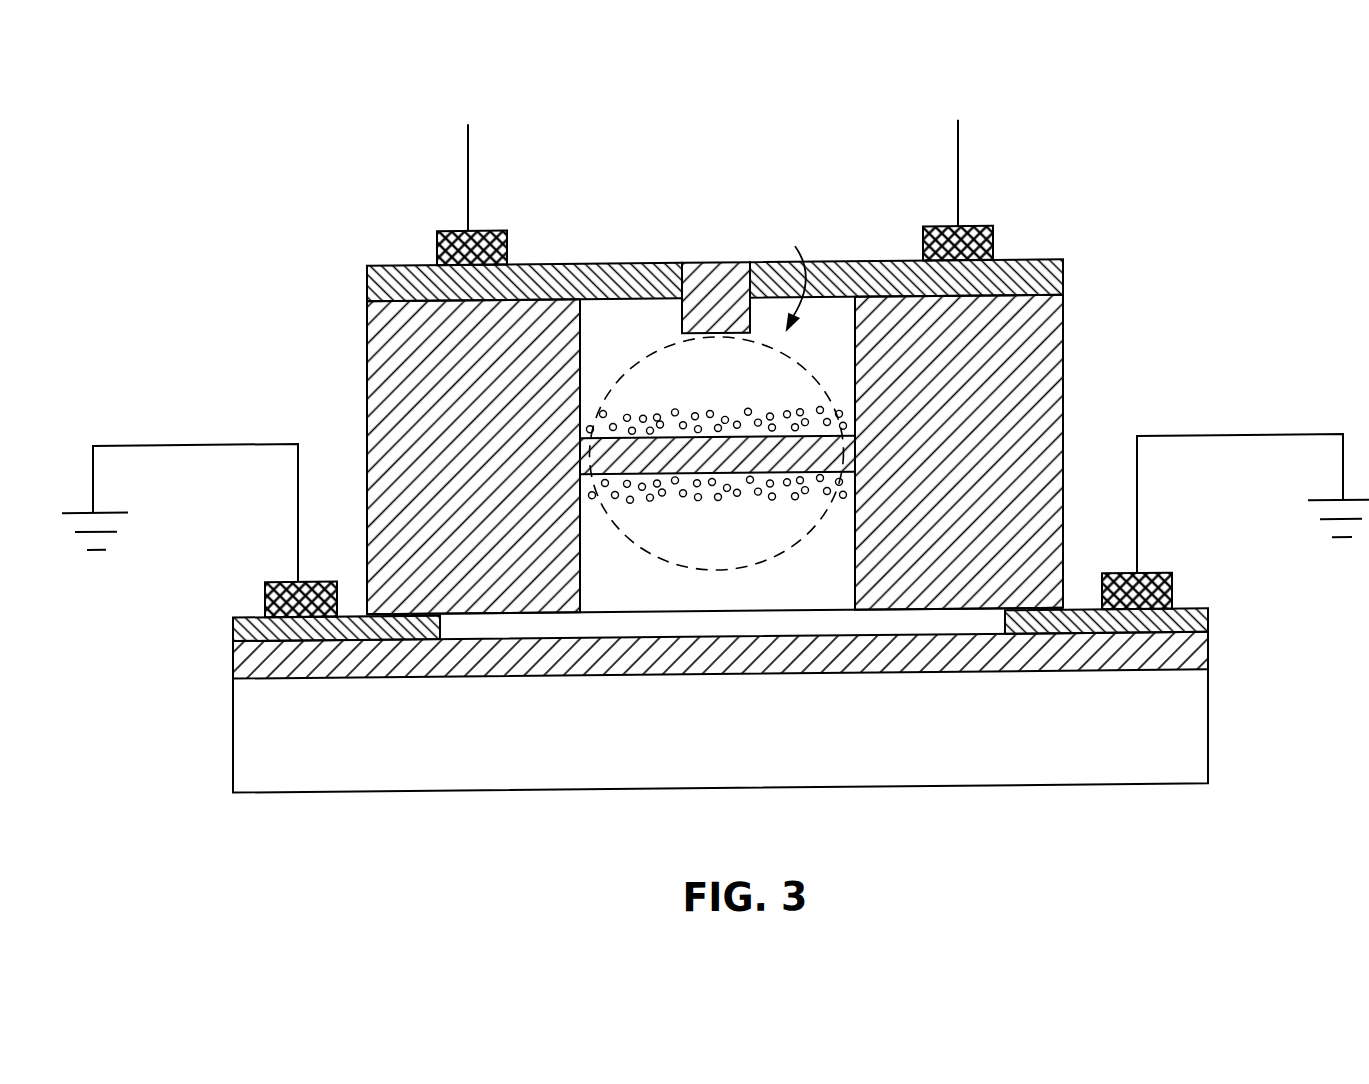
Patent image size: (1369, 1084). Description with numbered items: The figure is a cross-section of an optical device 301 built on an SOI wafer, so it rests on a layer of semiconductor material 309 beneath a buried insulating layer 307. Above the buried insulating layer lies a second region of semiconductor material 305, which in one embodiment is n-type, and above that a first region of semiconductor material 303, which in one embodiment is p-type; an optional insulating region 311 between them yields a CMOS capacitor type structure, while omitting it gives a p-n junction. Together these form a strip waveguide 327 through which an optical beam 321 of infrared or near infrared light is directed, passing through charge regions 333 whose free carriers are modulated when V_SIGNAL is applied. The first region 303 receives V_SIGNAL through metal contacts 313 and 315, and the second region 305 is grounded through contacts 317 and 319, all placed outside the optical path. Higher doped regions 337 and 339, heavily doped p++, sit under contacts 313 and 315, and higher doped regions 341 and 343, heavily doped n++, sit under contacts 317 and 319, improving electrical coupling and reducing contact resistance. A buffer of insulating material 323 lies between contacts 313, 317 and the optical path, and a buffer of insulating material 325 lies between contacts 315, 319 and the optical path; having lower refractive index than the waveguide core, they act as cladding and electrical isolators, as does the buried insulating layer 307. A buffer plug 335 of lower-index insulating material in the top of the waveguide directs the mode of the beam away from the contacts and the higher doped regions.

The optical device 301 is at (1080, 116).
The first region of semiconductor material 303 is at (695, 274).
The second region of semiconductor material 305 is at (657, 623).
The buried insulating layer 307 is at (1197, 661).
The layer of semiconductor material 309 is at (1197, 749).
The insulating region 311 is at (592, 493).
The contact 313 is at (437, 246).
The contact 315 is at (994, 236).
The contact 317 is at (265, 598).
The contact 319 is at (1172, 588).
The optical beam 321 is at (757, 564).
The buffer of insulating material 323 is at (385, 349).
The buffer of insulating material 325 is at (1063, 336).
The strip waveguide 327 is at (800, 274).
The charge regions 333 is at (705, 410).
The buffer plug 335 is at (718, 262).
The higher doped region 337 is at (367, 281).
The higher doped region 339 is at (1063, 270).
The higher doped region 341 is at (233, 622).
The higher doped region 343 is at (1195, 625).